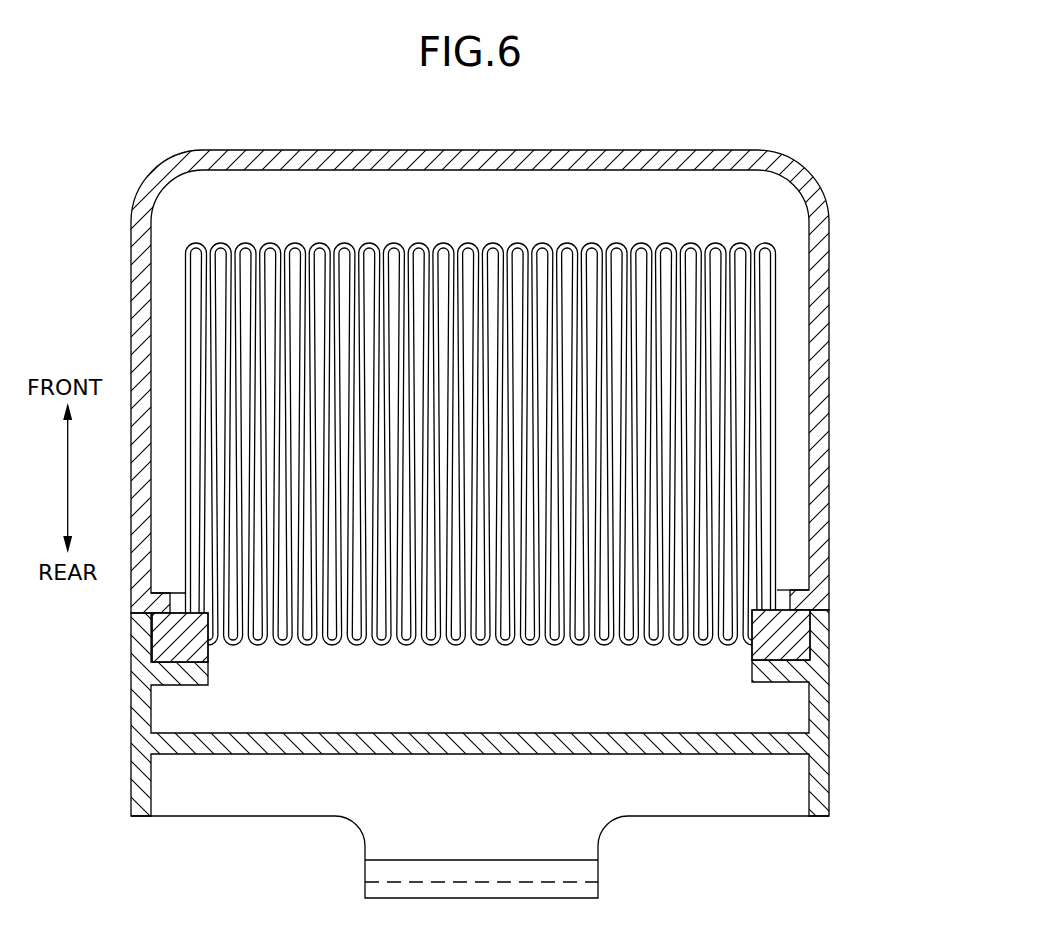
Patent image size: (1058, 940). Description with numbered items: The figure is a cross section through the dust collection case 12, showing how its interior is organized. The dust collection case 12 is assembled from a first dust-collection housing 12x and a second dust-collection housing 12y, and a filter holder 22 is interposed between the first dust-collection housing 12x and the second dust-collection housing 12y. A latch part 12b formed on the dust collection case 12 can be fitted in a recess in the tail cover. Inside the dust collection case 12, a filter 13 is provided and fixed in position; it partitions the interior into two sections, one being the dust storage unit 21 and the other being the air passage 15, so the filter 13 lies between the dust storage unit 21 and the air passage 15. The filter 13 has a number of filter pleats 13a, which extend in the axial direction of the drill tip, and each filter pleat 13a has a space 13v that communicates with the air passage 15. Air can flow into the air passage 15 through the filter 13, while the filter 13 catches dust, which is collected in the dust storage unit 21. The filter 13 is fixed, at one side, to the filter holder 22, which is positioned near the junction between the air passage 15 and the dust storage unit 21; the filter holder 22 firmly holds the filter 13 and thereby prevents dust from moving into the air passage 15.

The dust collection case 12 is at (525, 524).
The first dust-collection housing 12x is at (820, 482).
The second dust-collection housing 12y is at (818, 678).
The latch part 12b is at (568, 871).
The filter 13 is at (552, 365).
The filter pleats 13a is at (247, 244).
The space 13v is at (767, 438).
The air passage 15 is at (745, 708).
The dust storage unit 21 is at (618, 207).
The filter holder 22 is at (796, 634).